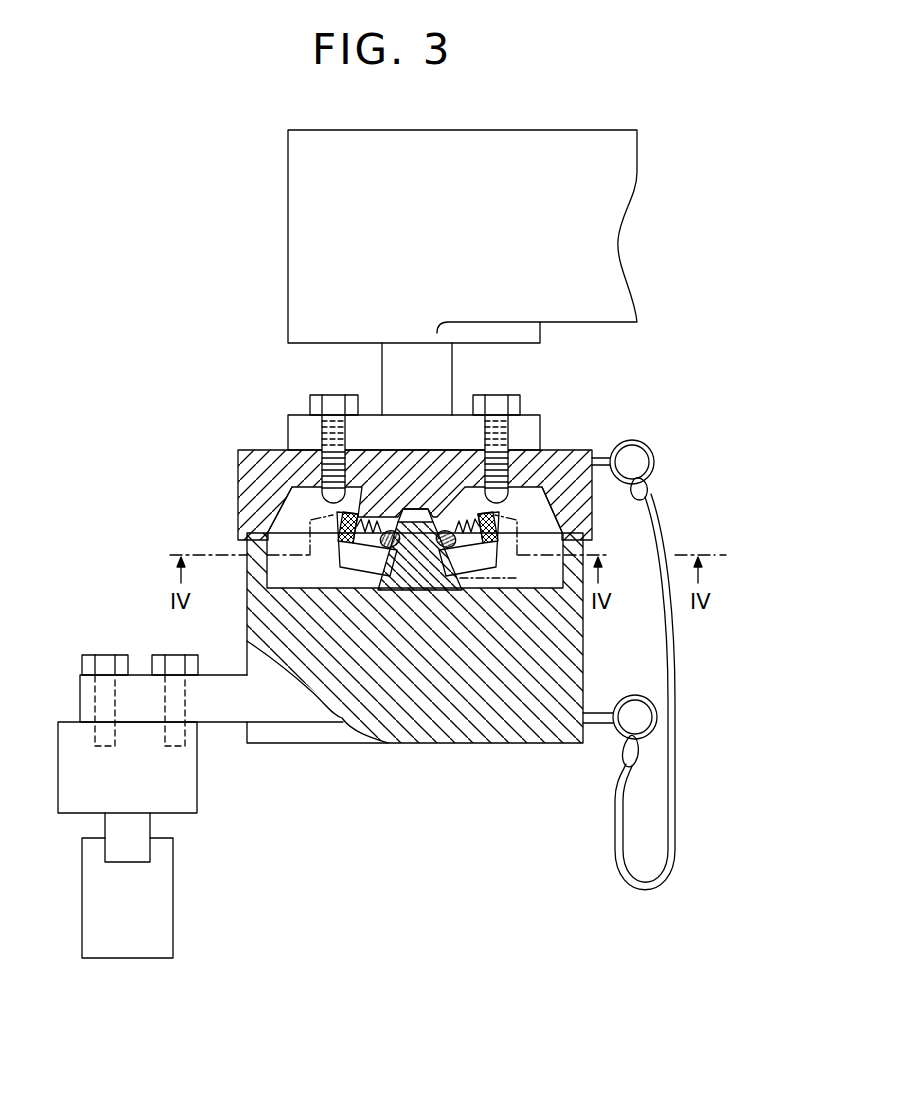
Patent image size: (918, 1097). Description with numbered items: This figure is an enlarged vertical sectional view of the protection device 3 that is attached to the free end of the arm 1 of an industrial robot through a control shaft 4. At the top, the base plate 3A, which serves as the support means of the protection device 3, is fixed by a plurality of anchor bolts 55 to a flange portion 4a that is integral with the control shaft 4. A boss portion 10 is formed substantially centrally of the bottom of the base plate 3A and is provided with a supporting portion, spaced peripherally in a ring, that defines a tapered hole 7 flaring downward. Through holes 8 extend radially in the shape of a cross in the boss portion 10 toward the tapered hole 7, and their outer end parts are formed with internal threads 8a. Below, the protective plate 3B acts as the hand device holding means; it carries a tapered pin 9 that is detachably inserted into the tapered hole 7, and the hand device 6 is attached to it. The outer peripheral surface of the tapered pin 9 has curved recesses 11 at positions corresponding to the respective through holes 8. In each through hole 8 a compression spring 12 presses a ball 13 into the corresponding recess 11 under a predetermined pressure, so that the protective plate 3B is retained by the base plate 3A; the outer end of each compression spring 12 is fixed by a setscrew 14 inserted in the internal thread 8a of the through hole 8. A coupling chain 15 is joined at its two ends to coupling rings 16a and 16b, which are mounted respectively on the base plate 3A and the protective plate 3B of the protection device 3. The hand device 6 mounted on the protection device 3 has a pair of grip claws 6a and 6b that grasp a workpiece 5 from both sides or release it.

The arm 1 is at (537, 140).
The control shaft 4 is at (388, 358).
The flange portion 4a is at (525, 431).
The anchor bolts 55 is at (320, 396).
The protection device 3 is at (369, 633).
The base plate 3A is at (250, 472).
The protective plate 3B is at (257, 623).
The internal threads 8a is at (343, 508).
The setscrew 14 is at (327, 520).
The tapered hole 7 is at (403, 562).
The curved recesses 11 is at (393, 513).
The through holes 8 is at (340, 557).
The boss portion 10 is at (473, 566).
The compression springs 12 is at (383, 513).
The balls 13 is at (352, 577).
The tapered pin 9 is at (437, 562).
The coupling ring 16a is at (654, 462).
The coupling ring 16b is at (637, 695).
The coupling chain 15 is at (674, 658).
The hand device 6 is at (183, 787).
The grip claw 6a is at (138, 848).
The grip claw 6b is at (191, 857).
The workpiece 5 is at (152, 927).